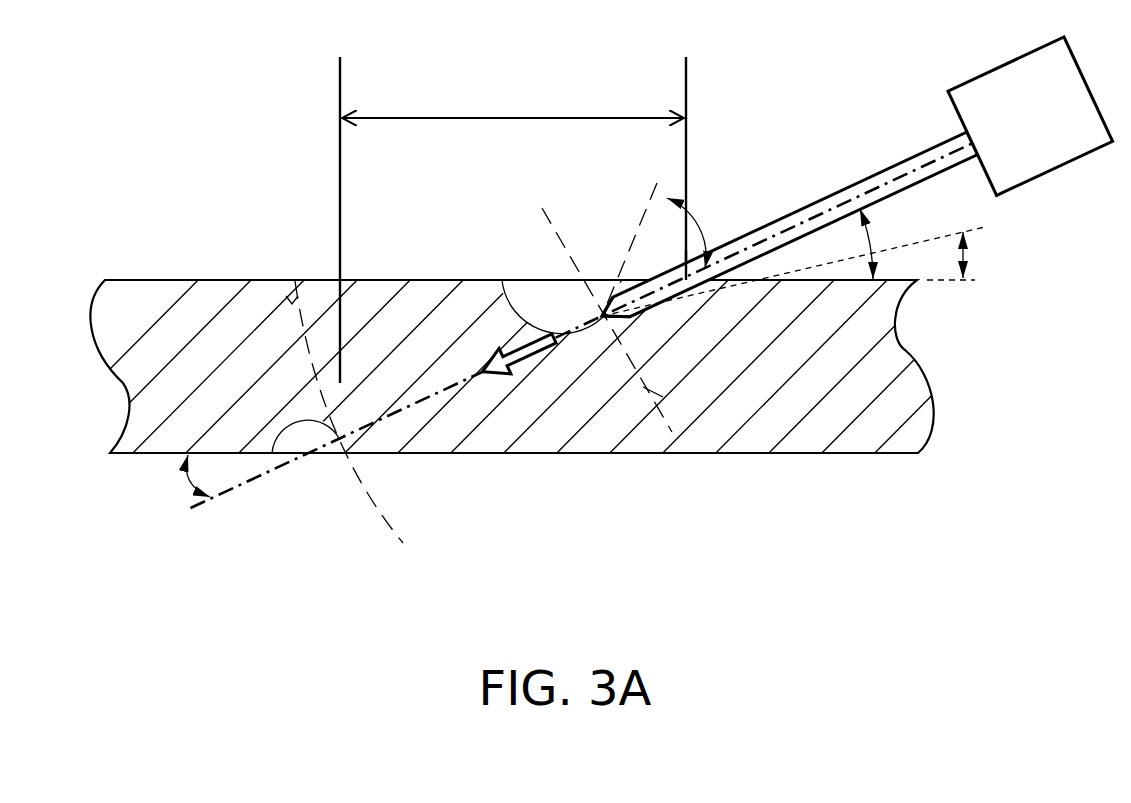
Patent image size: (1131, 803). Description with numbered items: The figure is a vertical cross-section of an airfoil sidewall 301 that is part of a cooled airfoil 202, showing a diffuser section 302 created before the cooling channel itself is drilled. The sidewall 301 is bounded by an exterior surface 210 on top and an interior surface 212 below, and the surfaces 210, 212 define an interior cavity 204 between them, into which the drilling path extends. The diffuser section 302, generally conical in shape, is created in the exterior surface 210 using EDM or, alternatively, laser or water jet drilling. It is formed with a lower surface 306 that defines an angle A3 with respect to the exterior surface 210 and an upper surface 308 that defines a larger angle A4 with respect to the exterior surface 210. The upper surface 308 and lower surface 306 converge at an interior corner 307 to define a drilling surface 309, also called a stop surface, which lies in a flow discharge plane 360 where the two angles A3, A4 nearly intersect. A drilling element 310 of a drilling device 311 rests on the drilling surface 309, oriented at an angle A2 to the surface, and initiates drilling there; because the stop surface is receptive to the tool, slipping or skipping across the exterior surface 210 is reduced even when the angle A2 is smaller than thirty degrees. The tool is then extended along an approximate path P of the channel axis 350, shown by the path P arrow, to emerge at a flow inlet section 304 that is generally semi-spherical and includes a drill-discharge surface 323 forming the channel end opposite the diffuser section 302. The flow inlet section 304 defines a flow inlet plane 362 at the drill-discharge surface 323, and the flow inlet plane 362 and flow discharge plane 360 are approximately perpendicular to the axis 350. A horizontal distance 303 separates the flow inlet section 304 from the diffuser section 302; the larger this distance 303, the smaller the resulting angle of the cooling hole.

The drilling arrangement 202 is at (231, 210).
The interior cavity 204 is at (165, 540).
The exterior surface 210 is at (242, 280).
The interior surface 212 is at (167, 458).
The airfoil sidewall 301 is at (212, 394).
The diffuser section 302 is at (673, 304).
The horizontal distance 303 is at (482, 115).
The flow inlet section 304 is at (323, 457).
The lower surface 306 is at (747, 288).
The interior corner 307 is at (598, 338).
The upper surface 308 is at (610, 294).
The drilling surface 309 is at (502, 280).
The drilling element 310 is at (838, 190).
The drilling device 311 is at (1020, 159).
The drill-discharge surface 323 is at (351, 419).
The axis 350 is at (460, 383).
The flow discharge plane 360 is at (640, 398).
The flow inlet plane 362 is at (287, 277).
The angle A2 is at (868, 232).
The angle A3 is at (967, 252).
The angle A4 is at (690, 224).
The path P is at (510, 350).